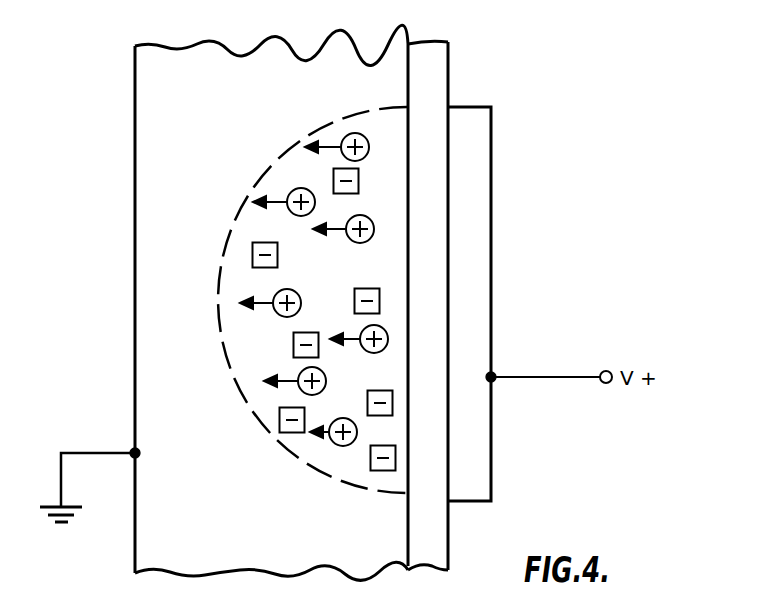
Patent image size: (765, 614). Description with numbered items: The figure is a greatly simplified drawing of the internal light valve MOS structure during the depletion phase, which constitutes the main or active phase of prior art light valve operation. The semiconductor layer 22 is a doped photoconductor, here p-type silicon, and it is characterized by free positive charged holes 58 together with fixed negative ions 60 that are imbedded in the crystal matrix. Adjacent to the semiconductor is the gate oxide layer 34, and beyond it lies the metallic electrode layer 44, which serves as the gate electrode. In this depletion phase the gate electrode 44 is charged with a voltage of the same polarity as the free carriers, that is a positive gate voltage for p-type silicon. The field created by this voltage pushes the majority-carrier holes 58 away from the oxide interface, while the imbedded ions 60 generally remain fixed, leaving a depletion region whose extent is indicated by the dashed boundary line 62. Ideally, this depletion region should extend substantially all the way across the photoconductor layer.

The semiconductor layer 22 is at (298, 58).
The gate oxide layer 34 is at (427, 45).
The metallic electrode layer 44 is at (482, 107).
The free positive charged holes 58 is at (301, 141).
The fixed negative ions 60 is at (354, 304).
The dashed boundary line 62 is at (218, 262).